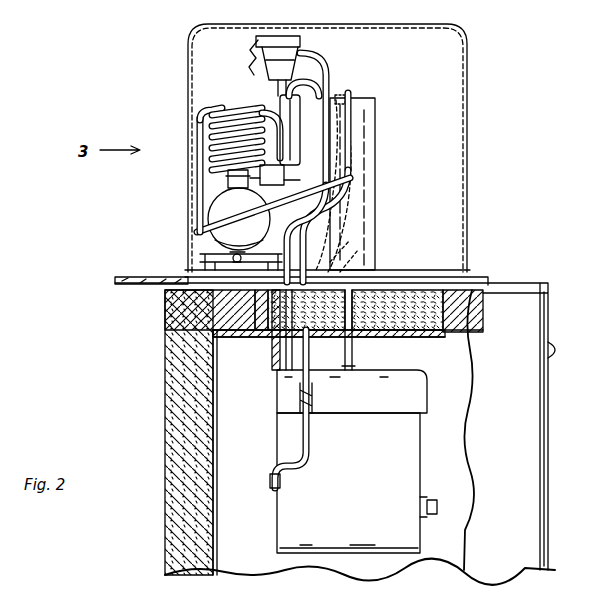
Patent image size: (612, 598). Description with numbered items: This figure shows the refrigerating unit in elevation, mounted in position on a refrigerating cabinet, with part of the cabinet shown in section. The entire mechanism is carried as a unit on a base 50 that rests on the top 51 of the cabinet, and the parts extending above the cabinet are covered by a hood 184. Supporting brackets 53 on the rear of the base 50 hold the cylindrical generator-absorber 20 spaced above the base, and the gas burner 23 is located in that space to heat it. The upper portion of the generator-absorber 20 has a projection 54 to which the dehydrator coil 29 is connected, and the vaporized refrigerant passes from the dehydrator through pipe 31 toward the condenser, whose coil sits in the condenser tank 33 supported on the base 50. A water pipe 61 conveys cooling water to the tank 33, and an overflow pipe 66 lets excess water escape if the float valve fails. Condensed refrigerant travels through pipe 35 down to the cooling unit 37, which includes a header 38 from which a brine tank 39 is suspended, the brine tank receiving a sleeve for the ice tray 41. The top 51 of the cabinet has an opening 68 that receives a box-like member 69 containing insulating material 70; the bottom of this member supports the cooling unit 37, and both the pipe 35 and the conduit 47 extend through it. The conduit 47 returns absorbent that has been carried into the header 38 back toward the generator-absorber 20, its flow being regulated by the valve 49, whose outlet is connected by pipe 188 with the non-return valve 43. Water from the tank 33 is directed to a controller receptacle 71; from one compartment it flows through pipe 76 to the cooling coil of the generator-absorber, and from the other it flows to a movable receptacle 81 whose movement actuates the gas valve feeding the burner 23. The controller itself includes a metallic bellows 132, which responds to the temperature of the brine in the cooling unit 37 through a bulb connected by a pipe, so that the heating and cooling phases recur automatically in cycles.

The hood 184 is at (188, 70).
The top of refrigerator cabinet 51 is at (510, 287).
The base 50 is at (410, 273).
The opening 68 is at (258, 316).
The cooling unit 37 is at (436, 388).
The header 38 is at (277, 405).
The brine tank 39 is at (277, 517).
The ice tray 41 is at (432, 500).
The box-like member 69 is at (274, 350).
The insulating material 70 is at (289, 350).
The pipe 35 is at (353, 355).
The gas burner 23 is at (235, 262).
The condenser tank 33 is at (376, 205).
The overflow pipe 66 is at (368, 178).
The conduit 47 is at (332, 76).
The water pipe 61 is at (352, 96).
The movable receptacle 81 is at (292, 211).
The supporting brackets 53 is at (203, 251).
The generator-absorber 20 is at (208, 219).
The projection 54 is at (205, 196).
The metallic bellows 132 is at (200, 152).
The dehydrator coil 29 is at (235, 110).
The pipe 76 is at (245, 182).
The receptacle 71 is at (284, 176).
The non-return valve 43 is at (286, 135).
The pipe 188 is at (284, 100).
The pipe 31 is at (318, 99).
The valve 49 is at (300, 50).